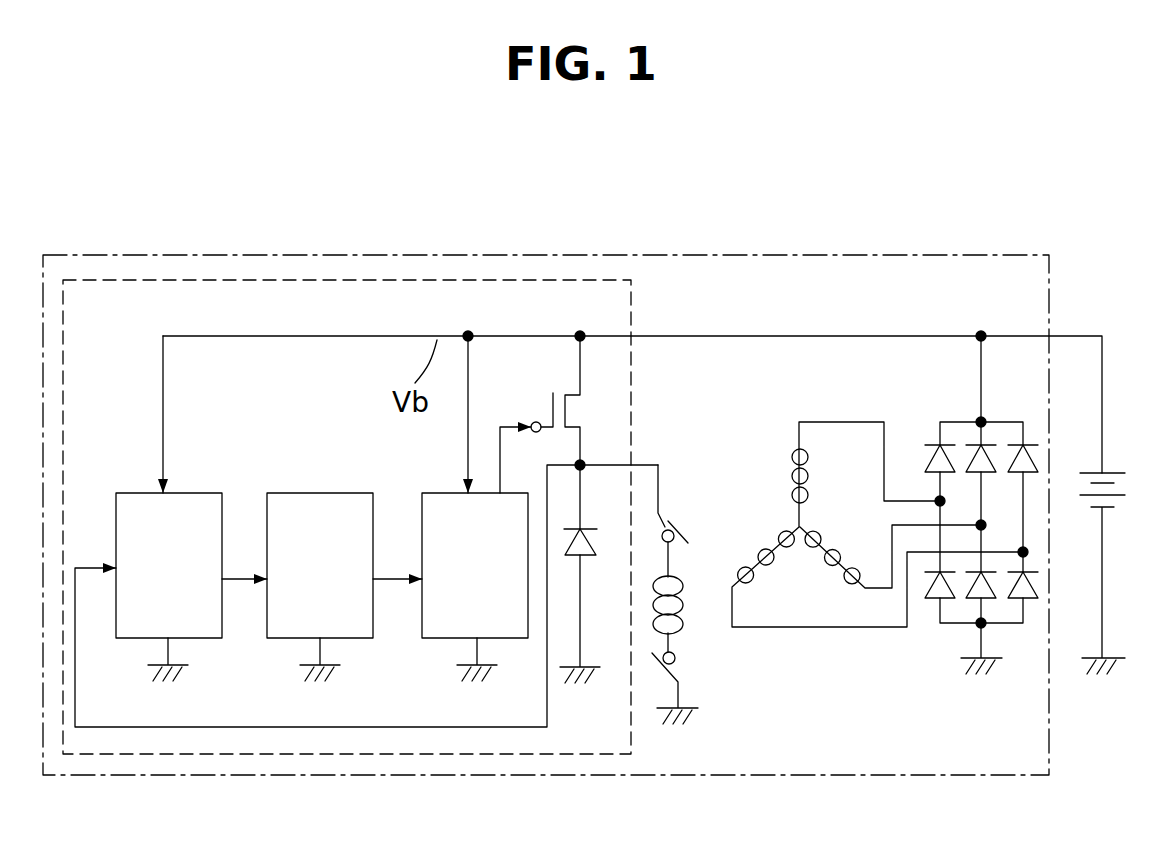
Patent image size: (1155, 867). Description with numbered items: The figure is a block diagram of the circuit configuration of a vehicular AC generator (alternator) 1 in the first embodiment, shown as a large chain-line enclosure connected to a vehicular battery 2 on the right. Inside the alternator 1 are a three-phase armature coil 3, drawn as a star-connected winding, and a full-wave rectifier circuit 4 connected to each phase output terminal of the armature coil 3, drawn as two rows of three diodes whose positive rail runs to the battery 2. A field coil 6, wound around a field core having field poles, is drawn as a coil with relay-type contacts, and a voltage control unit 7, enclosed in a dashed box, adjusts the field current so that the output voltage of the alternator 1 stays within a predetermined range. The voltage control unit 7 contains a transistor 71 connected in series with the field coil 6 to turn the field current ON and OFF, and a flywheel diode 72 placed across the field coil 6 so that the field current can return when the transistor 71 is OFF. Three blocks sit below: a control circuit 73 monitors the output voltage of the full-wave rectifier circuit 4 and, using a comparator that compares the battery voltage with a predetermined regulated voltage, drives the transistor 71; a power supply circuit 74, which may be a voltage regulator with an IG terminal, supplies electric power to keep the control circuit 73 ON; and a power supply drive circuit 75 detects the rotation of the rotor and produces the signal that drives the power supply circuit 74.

The vehicular AC generator 1 is at (733, 257).
The vehicular battery 2 is at (1113, 470).
The three-phase armature coil 3 is at (825, 447).
The full-wave rectifier circuit 4 is at (997, 382).
The field coil 6 is at (670, 643).
The voltage control unit 7 is at (605, 278).
The transistor 71 is at (580, 387).
The flywheel diode 72 is at (590, 635).
The control circuit 73 is at (450, 638).
The power supply circuit 74 is at (281, 638).
The power supply drive circuit 75 is at (131, 638).